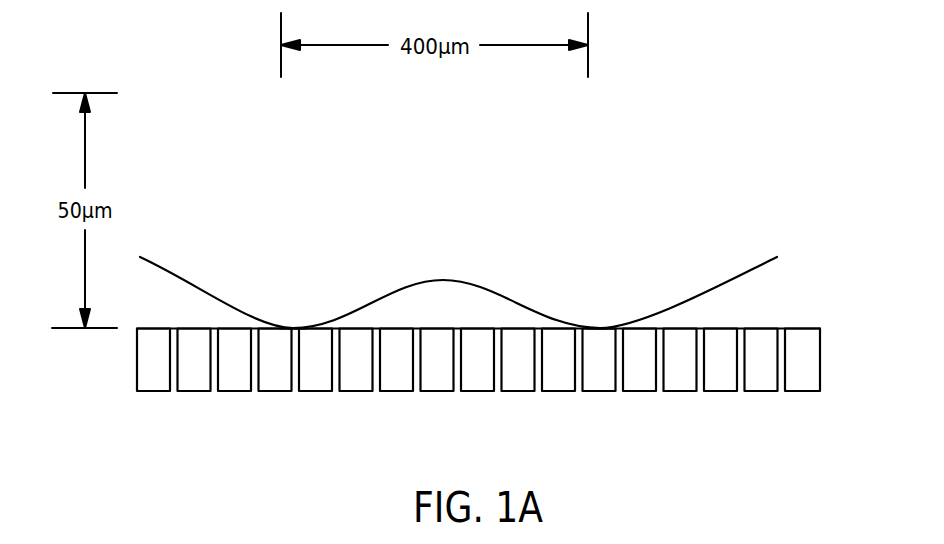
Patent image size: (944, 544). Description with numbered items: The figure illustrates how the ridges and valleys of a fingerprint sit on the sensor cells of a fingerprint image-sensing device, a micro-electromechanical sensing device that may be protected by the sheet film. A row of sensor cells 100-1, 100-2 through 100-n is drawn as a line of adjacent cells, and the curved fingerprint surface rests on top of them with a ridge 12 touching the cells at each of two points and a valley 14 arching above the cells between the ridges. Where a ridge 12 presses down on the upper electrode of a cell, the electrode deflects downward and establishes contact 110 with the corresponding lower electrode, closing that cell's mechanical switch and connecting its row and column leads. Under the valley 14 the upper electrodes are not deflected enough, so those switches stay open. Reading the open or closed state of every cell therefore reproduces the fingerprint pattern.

The ridge 12 is at (296, 327).
The valley 14 is at (440, 279).
The contact 110 is at (281, 346).
The sensor cell 100-n is at (151, 379).
The sensor cell 100-2 is at (763, 379).
The sensor cell 100-1 is at (802, 379).